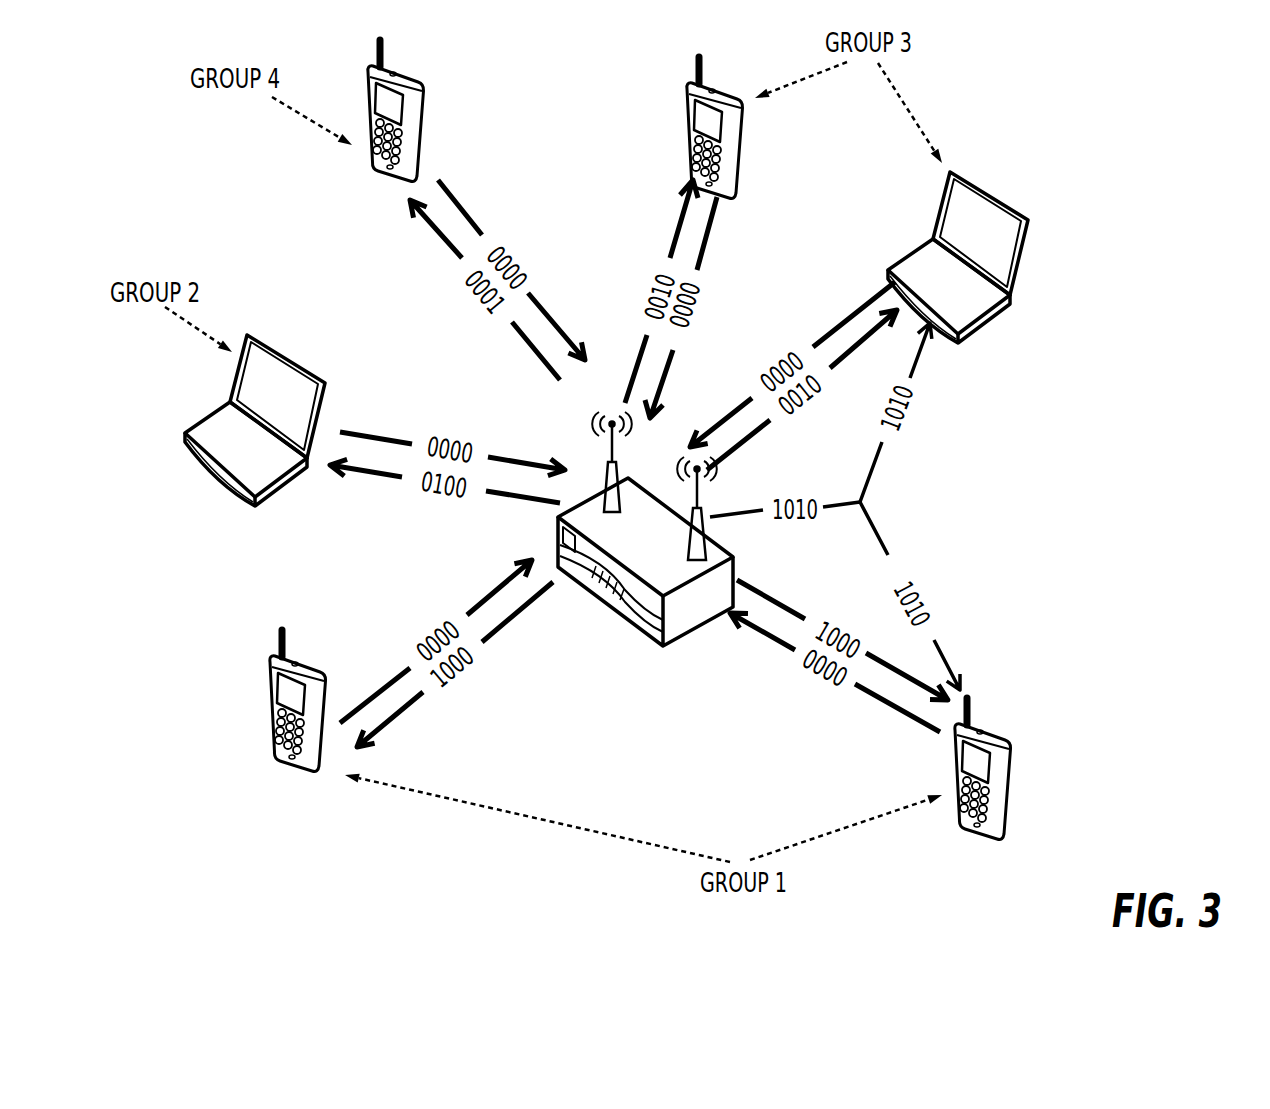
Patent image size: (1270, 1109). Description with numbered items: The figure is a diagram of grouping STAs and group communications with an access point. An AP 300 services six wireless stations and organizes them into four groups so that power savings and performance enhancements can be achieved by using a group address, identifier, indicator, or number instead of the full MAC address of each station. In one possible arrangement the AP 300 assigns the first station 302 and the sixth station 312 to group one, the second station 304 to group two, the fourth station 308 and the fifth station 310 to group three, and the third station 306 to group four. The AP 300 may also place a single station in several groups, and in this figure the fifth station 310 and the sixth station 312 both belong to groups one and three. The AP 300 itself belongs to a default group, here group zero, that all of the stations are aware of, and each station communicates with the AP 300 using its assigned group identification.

The AP 300 is at (640, 633).
The STA #1 302 is at (290, 773).
The STA #2 304 is at (205, 470).
The STA #3 306 is at (408, 70).
The STA #4 308 is at (713, 78).
The STA #5 310 is at (1027, 257).
The STA #6 312 is at (1012, 768).